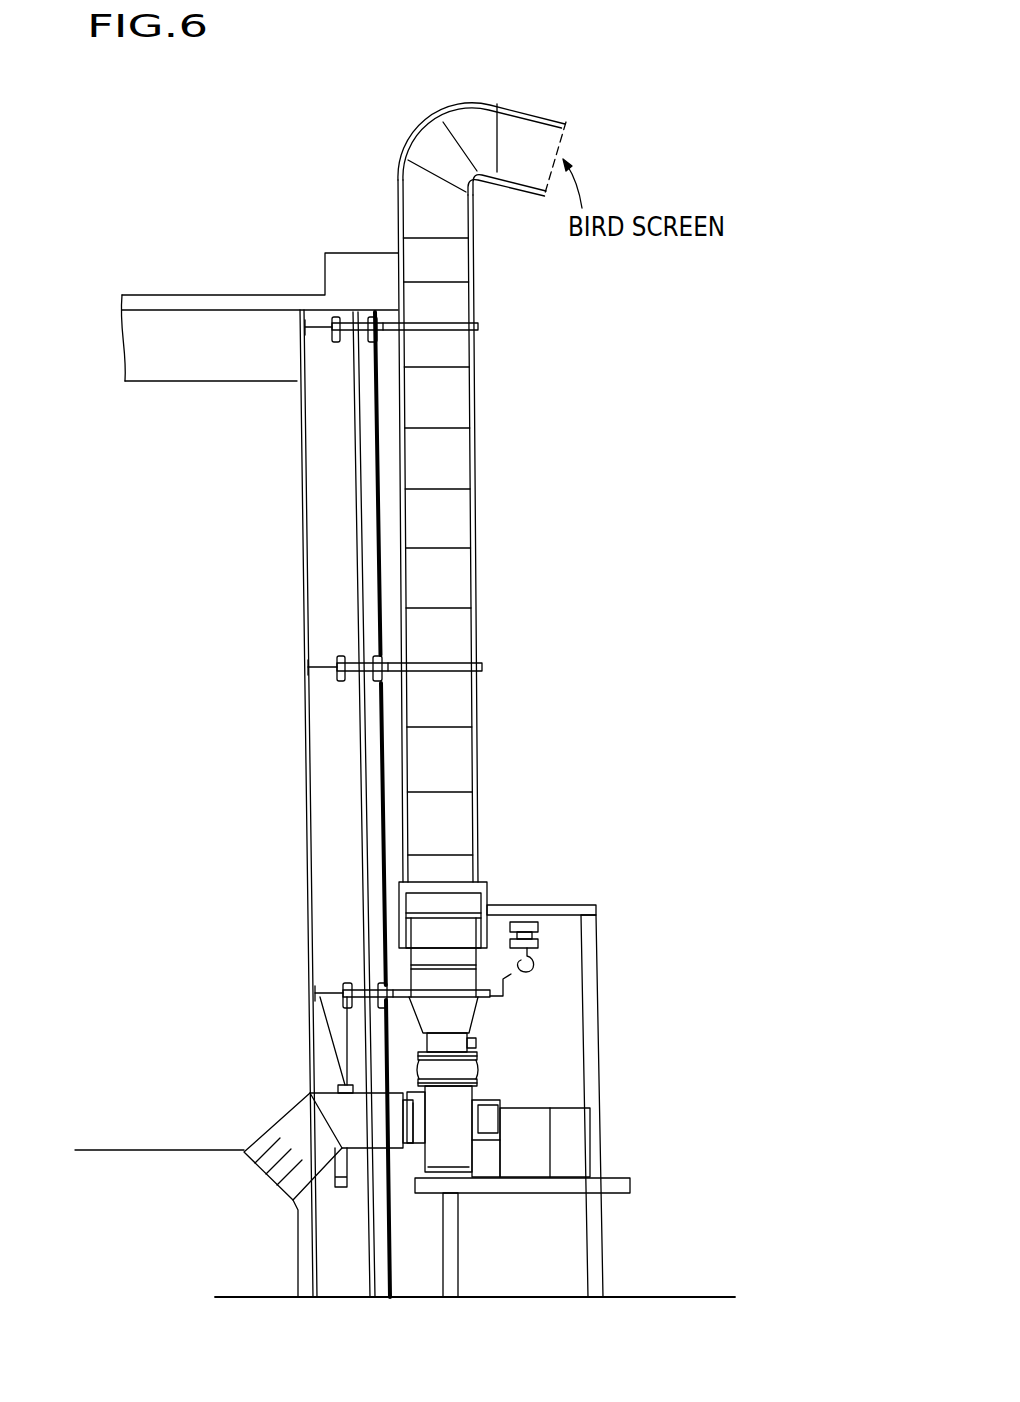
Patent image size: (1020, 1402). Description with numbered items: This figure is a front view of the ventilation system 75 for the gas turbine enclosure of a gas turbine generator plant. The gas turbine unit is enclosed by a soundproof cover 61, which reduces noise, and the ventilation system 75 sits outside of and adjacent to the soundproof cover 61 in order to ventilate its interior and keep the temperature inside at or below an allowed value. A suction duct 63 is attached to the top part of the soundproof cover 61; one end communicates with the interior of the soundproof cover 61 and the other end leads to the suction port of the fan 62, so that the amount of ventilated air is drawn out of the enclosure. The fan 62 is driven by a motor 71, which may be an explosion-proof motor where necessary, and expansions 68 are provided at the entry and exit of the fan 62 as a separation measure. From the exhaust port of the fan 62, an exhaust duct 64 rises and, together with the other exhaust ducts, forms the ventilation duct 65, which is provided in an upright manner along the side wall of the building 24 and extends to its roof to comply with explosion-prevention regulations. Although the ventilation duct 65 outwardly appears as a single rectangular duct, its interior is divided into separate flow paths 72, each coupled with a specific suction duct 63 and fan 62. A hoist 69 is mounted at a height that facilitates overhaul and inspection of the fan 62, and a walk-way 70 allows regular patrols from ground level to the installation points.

The ventilation system 75 is at (474, 88).
The building 24 is at (170, 296).
The ventilation duct 65 is at (474, 447).
The flow paths 72 is at (458, 578).
The exhaust ducts 64 is at (491, 922).
The hoist 69 is at (538, 946).
The fan 62 is at (463, 1092).
The motor 71 is at (486, 1103).
The walk-way 70 is at (567, 1176).
The expansions 68 is at (411, 1145).
The suction duct 63 is at (290, 1128).
The soundproof cover 61 is at (155, 1163).